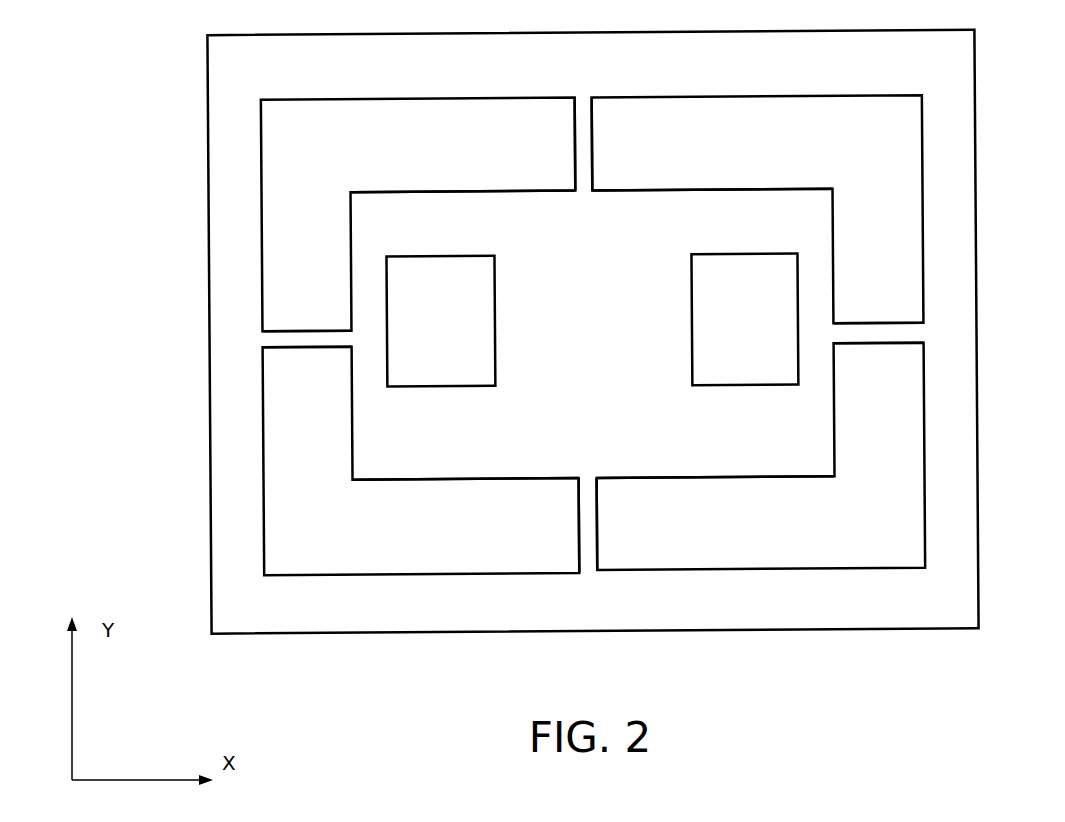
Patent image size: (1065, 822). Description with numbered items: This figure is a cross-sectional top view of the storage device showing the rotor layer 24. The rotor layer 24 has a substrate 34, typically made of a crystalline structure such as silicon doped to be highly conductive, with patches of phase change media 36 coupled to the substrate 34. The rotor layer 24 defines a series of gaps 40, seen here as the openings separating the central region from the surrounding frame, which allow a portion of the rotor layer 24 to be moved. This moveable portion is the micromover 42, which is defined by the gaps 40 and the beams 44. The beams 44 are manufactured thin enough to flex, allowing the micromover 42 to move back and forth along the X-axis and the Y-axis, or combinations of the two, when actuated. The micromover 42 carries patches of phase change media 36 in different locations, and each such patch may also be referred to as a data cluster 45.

The rotor layer 24 is at (170, 33).
The substrate 34 is at (950, 563).
The patches of phase change media 36 is at (592, 321).
The gaps 40 is at (368, 162).
The micromover 42 is at (605, 327).
The beams 44 is at (583, 155).
The data cluster 45 is at (415, 334).